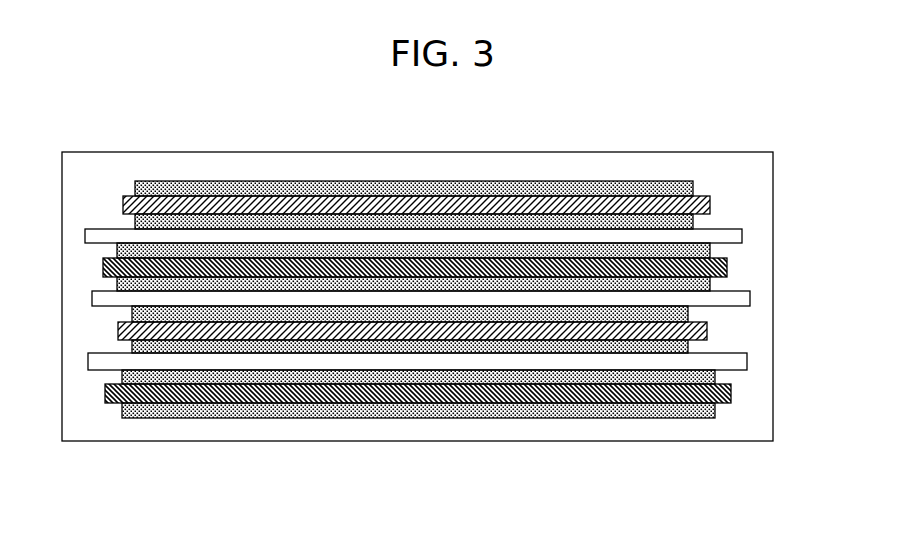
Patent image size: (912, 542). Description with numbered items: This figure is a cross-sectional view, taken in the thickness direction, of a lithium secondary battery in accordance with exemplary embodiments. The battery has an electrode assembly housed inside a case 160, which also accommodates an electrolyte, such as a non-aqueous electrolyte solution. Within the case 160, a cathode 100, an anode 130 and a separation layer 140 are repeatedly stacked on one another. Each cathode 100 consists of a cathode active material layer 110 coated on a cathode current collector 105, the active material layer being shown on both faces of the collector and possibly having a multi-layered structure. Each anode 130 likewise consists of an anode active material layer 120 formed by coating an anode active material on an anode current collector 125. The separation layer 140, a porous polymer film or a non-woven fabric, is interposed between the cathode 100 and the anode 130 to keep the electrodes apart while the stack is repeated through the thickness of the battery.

The cathode 100 is at (492, 200).
The cathode current collector 105 is at (710, 200).
The cathode active material layer 110 is at (693, 186).
The anode active material layer 120 is at (710, 250).
The anode current collector 125 is at (727, 268).
The anode 130 is at (488, 266).
The separation layer 140 is at (85, 236).
The case 160 is at (197, 441).